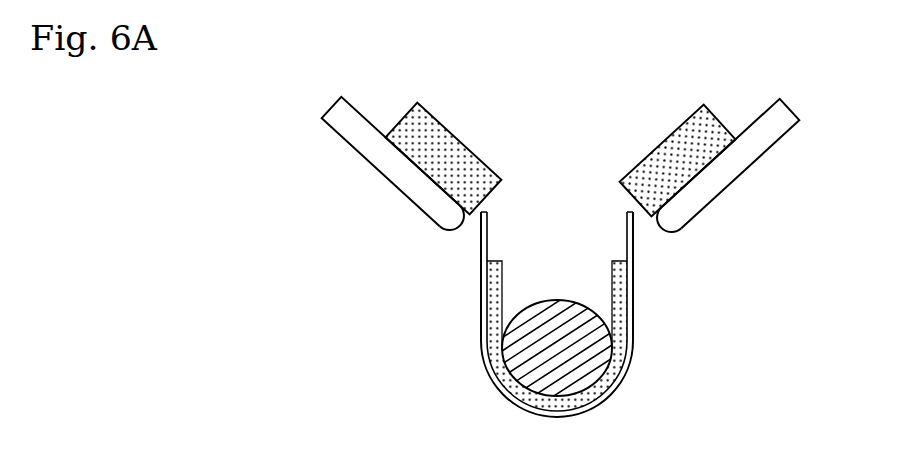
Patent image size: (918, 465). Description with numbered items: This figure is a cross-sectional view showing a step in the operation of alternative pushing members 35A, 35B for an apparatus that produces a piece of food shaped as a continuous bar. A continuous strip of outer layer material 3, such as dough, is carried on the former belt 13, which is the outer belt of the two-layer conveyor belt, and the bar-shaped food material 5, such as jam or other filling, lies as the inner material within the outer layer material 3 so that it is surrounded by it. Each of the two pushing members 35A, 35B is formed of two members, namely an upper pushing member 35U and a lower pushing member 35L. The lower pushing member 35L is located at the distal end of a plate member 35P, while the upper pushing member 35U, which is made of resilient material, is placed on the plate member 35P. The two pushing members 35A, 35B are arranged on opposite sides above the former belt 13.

The outer layer material 3 is at (502, 267).
The food material 5 is at (553, 299).
The former belt 13 is at (633, 340).
The pushing member 35A is at (720, 206).
The pushing member 35B is at (386, 197).
The plate member 35P is at (556, 184).
The upper pushing member 35U is at (504, 180).
The lower pushing member 35L is at (461, 224).